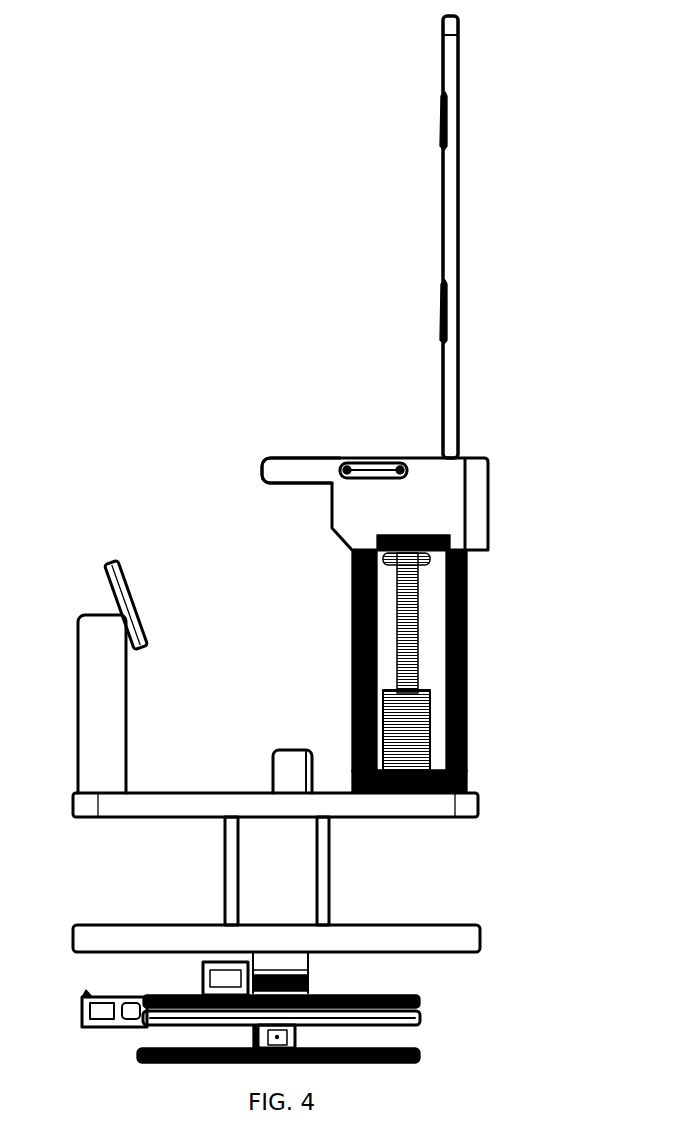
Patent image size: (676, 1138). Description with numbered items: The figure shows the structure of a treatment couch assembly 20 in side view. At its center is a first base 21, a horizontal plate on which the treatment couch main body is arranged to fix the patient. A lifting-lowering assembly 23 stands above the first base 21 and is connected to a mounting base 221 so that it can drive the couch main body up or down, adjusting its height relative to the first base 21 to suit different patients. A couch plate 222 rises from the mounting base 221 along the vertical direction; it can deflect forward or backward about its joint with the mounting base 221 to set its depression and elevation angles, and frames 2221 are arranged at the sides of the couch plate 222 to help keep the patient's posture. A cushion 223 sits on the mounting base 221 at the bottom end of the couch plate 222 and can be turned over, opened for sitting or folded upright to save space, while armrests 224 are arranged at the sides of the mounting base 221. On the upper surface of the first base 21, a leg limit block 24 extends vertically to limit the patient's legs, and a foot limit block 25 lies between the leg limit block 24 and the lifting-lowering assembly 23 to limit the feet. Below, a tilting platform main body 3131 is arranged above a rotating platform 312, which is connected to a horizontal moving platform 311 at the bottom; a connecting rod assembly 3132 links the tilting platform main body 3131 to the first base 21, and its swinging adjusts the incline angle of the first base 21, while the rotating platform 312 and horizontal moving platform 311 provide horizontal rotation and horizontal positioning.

The treatment couch assembly 20 is at (118, 62).
The couch plate 222 is at (441, 228).
The frames 2221 is at (438, 118).
The mounting base 221 is at (402, 510).
The cushion 223 is at (298, 477).
The armrests 224 is at (365, 457).
The lifting-lowering assembly 23 is at (424, 681).
The leg limit block 24 is at (105, 677).
The foot limit block 25 is at (294, 772).
The first base 21 is at (440, 810).
The connecting rod assembly 3132 is at (326, 886).
The tilting platform main body 3131 is at (405, 935).
The rotating platform 312 is at (175, 998).
The horizontal moving platform 311 is at (147, 1053).